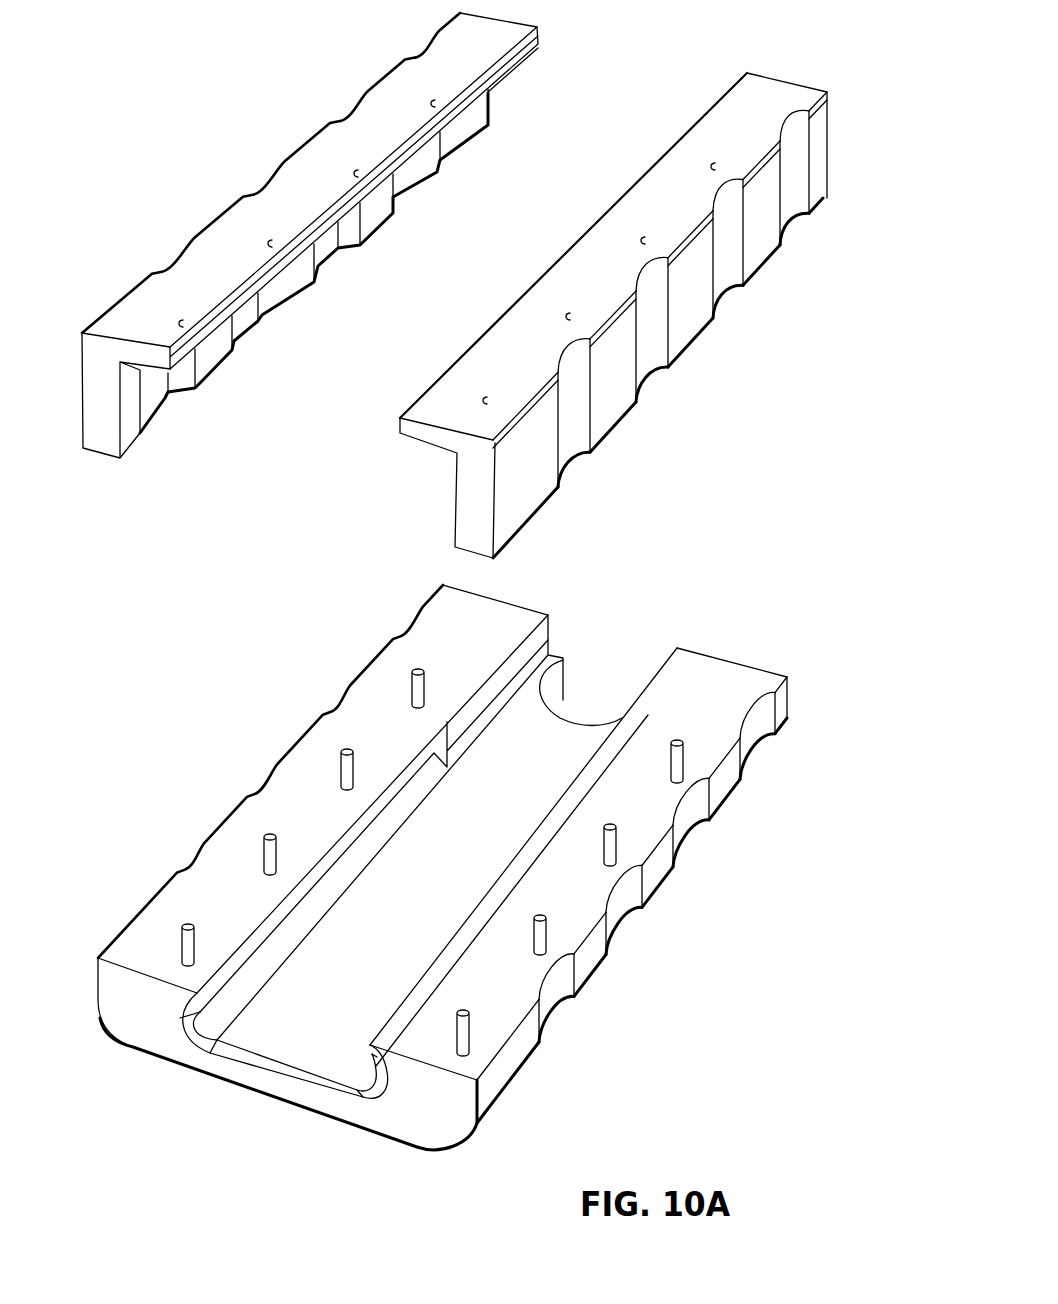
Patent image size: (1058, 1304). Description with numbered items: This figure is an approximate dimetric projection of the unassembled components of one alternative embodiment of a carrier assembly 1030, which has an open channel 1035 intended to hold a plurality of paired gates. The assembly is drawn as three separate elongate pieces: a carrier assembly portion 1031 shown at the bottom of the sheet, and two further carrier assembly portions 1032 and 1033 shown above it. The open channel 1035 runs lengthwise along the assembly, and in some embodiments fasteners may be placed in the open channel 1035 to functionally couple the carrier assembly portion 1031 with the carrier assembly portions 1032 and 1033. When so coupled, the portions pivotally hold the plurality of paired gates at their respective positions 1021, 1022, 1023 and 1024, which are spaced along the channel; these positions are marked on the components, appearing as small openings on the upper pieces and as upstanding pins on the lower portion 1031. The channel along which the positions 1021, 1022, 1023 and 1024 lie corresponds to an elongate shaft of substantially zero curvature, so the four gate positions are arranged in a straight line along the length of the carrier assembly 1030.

The carrier assembly 1030 is at (441, 581).
The carrier assembly portion 1031 is at (726, 712).
The carrier assembly portion 1032 is at (765, 140).
The carrier assembly portion 1033 is at (310, 285).
The open channel 1035 is at (458, 505).
The paired gate position 1021 is at (472, 394).
The paired gate position 1022 is at (558, 313).
The paired gate position 1023 is at (633, 236).
The paired gate position 1024 is at (704, 162).